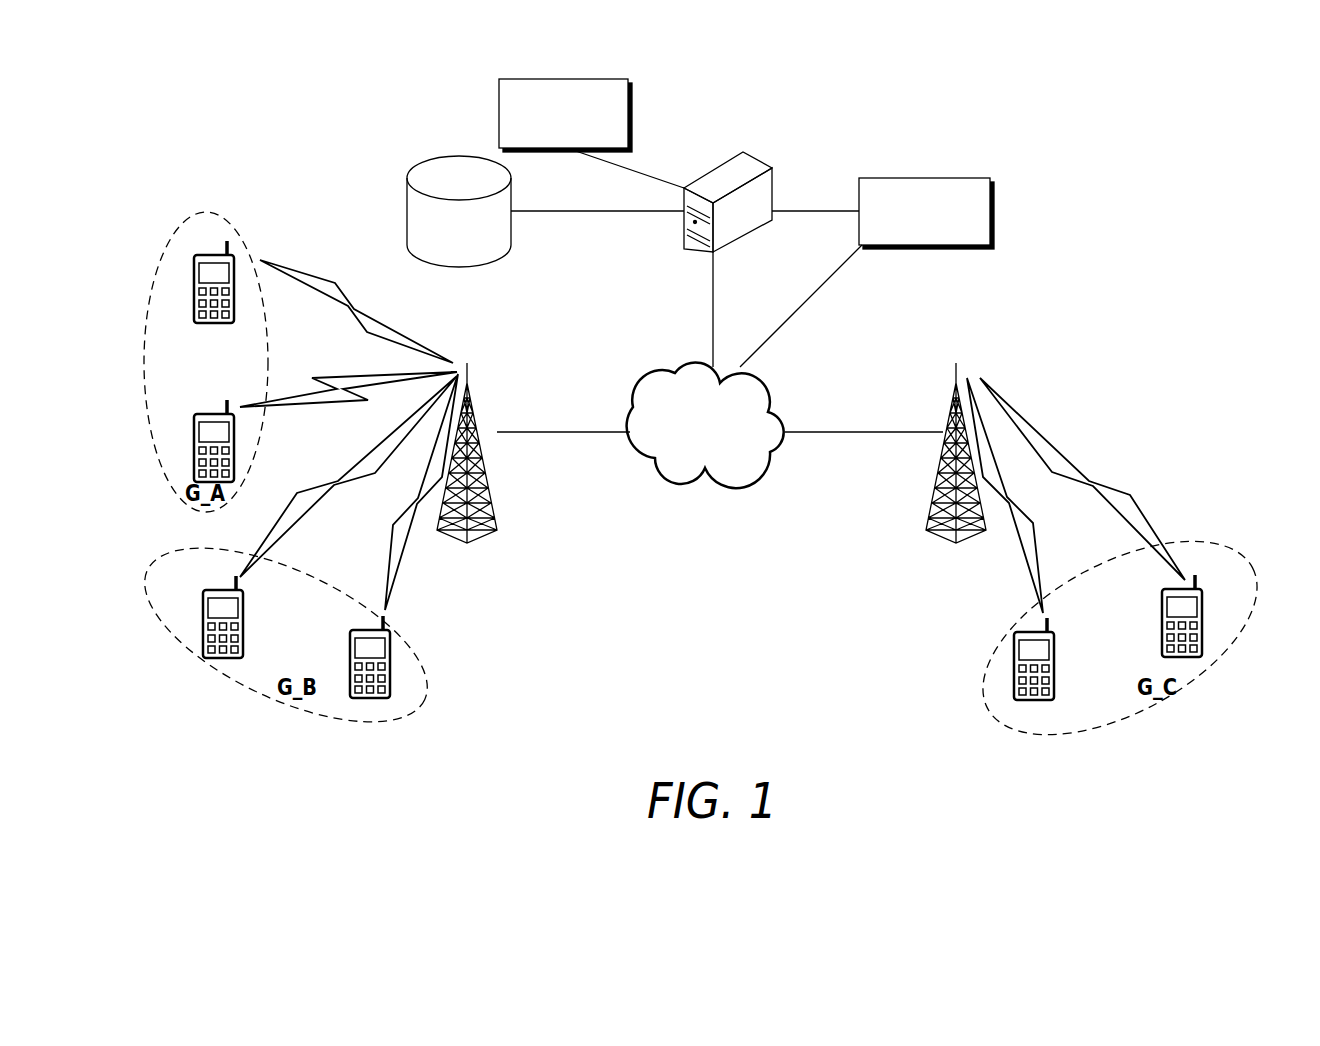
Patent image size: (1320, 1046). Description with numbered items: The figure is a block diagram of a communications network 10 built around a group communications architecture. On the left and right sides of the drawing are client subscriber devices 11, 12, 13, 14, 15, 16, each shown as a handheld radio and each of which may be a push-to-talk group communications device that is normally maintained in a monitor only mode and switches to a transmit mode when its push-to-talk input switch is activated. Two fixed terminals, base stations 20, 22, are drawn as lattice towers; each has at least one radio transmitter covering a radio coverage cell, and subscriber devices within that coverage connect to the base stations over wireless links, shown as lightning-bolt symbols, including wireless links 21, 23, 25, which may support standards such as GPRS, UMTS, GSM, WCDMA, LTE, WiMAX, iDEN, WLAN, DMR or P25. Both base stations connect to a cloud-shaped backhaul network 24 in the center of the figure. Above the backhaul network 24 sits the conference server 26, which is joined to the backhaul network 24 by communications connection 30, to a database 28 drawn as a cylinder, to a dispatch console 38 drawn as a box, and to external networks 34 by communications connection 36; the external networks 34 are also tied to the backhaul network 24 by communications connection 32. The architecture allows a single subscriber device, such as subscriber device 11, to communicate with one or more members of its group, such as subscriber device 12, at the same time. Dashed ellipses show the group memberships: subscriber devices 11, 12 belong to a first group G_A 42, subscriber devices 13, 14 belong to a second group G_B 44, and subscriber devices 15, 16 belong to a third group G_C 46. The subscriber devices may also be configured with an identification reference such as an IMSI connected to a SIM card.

The communications network 10 is at (1280, 767).
The client subscriber device 11 is at (210, 255).
The client subscriber device 12 is at (210, 414).
The client subscriber device 13 is at (218, 590).
The client subscriber device 14 is at (365, 630).
The client subscriber device 15 is at (1056, 666).
The client subscriber device 16 is at (1204, 624).
The fixed terminal 20 is at (476, 402).
The wireless link 21 is at (412, 568).
The fixed terminal 22 is at (952, 405).
The wireless link 23 is at (1006, 575).
The backhaul network 24 is at (692, 487).
The wireless link 25 is at (292, 262).
The conference server 26 is at (770, 167).
The database 28 is at (418, 161).
The communications connection 30 is at (713, 310).
The communications connection 32 is at (802, 291).
The external networks 34 is at (983, 178).
The communications connection 36 is at (817, 211).
The dispatch console 38 is at (617, 80).
The first group G_A 42 is at (218, 212).
The second group G_B 44 is at (428, 683).
The third group G_C 46 is at (1240, 559).